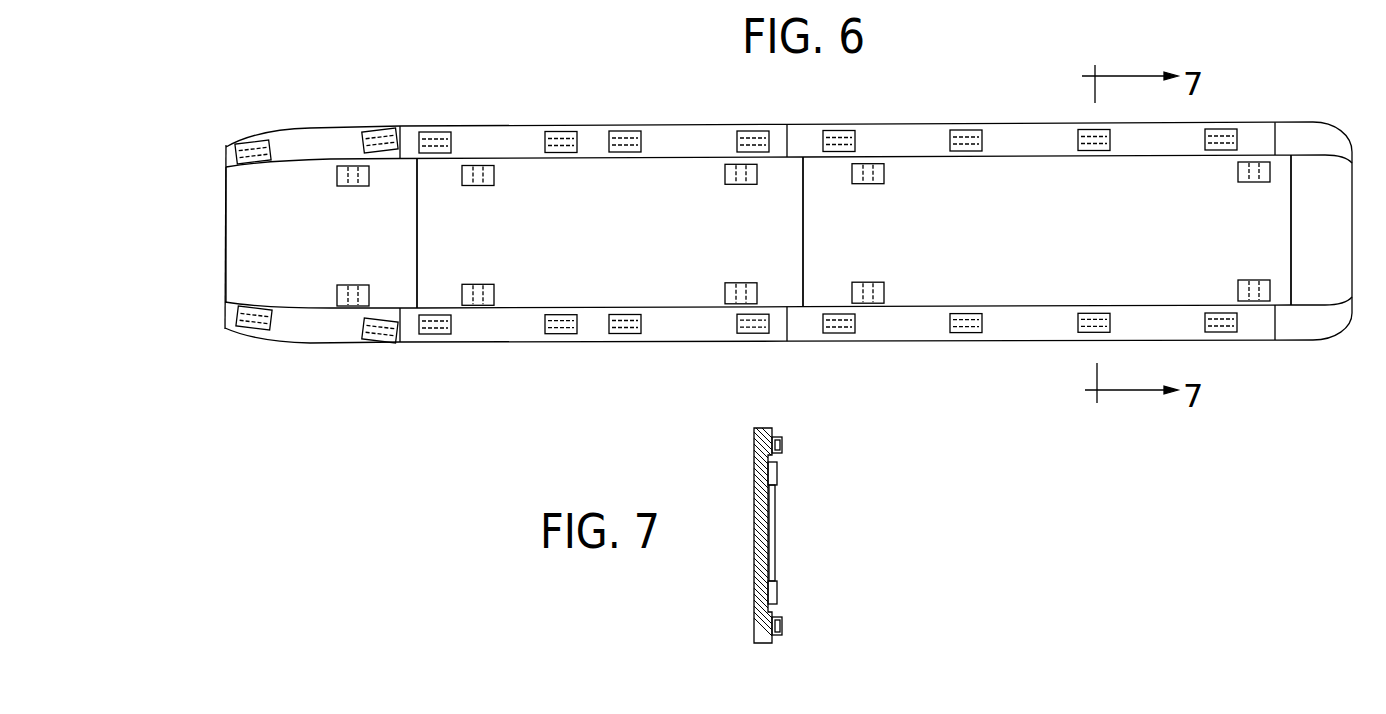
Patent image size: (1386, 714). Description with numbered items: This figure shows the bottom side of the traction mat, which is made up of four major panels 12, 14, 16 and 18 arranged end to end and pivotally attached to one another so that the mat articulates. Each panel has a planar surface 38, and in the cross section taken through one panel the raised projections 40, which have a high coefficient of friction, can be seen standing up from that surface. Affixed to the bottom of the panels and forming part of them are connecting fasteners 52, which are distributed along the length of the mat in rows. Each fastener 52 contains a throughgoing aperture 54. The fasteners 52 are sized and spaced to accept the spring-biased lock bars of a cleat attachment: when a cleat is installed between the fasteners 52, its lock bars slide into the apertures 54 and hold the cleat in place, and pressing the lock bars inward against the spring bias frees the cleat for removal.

In FIG. 6, the panel 12 is at (342, 141).
In FIG. 6, the panel 14 is at (660, 133).
In FIG. 6, the panel 16 is at (1035, 131).
In FIG. 6, the panel 18 is at (1288, 128).
In FIG. 6, the planar surface 38 is at (275, 236).
In FIG. 7, the raised projections 40 is at (756, 523).
In FIG. 6, the connecting fasteners 52 is at (757, 143).
In FIG. 7, the connecting fasteners 52 is at (778, 478).
In FIG. 6, the throughgoing apertures 54 is at (733, 179).
In FIG. 7, the throughgoing apertures 54 is at (783, 443).